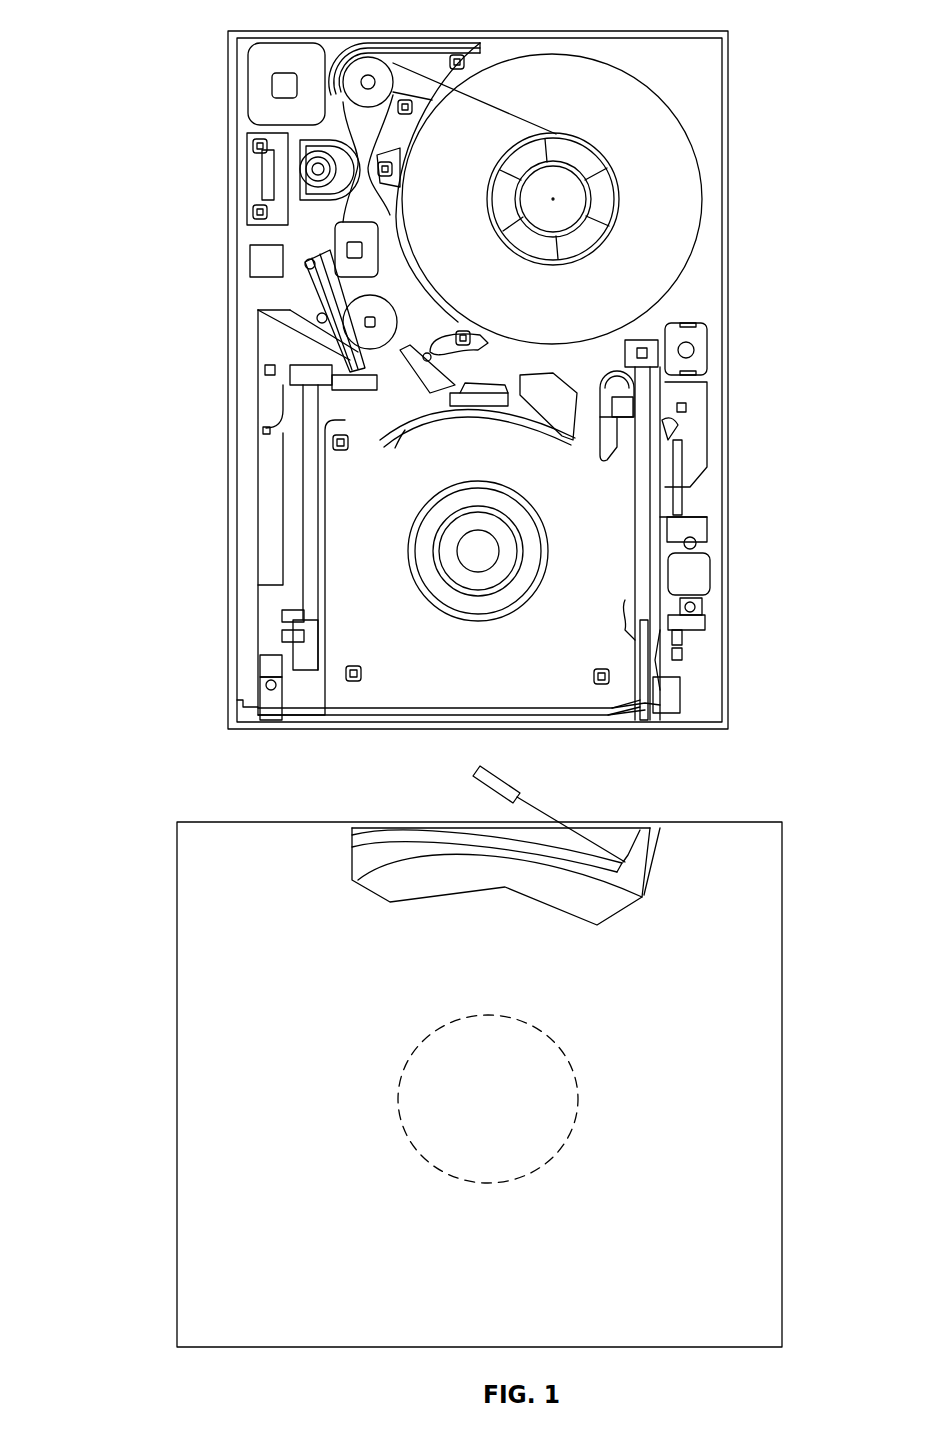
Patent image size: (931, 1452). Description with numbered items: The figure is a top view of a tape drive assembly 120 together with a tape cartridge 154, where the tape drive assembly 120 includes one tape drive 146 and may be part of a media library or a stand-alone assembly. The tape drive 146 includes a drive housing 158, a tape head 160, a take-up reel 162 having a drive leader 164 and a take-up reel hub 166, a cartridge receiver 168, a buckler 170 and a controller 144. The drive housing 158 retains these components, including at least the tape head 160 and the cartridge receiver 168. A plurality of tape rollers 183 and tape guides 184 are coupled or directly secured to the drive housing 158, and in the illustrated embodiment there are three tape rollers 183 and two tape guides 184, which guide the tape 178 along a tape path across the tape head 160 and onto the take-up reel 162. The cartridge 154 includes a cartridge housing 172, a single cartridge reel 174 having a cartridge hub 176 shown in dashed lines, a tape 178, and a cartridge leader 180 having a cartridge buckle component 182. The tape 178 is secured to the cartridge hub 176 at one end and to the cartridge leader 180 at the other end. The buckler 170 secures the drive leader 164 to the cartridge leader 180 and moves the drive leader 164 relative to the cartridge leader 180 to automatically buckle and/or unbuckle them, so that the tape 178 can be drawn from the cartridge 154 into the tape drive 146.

The tape drive assembly 120 is at (728, 333).
The controller 144 is at (268, 262).
The tape drive 146 is at (728, 282).
The cartridge 154 is at (190, 880).
The drive housing 158 is at (723, 218).
The tape head 160 is at (348, 168).
The take-up reel 162 is at (673, 195).
The drive leader 164 is at (372, 432).
The take-up reel hub 166 is at (590, 138).
The cartridge receiver 168 is at (645, 705).
The buckler 170 is at (457, 322).
The cartridge housing 172 is at (783, 983).
The cartridge reel 174 is at (432, 885).
The cartridge hub 176 is at (398, 1098).
The tape 178 is at (623, 867).
The cartridge leader 180 is at (545, 813).
The cartridge buckle component 182 is at (475, 772).
The tape rollers 183 is at (420, 357).
The tape guides 184 is at (330, 338).